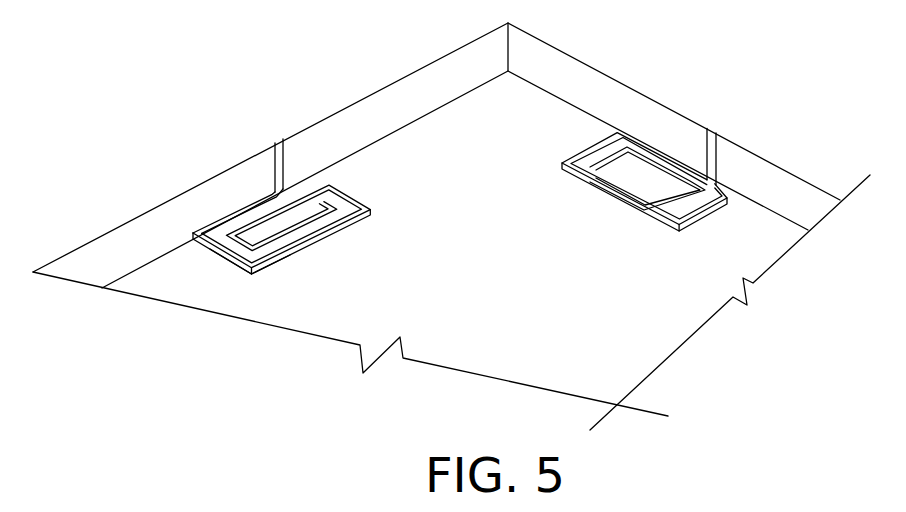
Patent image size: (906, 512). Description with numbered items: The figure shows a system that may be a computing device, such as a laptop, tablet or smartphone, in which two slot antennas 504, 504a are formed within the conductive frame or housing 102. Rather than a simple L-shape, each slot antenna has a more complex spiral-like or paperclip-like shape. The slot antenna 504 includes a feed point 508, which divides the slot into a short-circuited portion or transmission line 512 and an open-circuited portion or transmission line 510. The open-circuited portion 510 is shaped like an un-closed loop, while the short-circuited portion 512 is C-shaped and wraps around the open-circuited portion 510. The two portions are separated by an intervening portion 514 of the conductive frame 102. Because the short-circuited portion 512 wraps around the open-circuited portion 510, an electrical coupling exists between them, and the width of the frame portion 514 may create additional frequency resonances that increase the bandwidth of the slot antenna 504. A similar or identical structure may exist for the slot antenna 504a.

The conductive frame or housing 102 is at (460, 47).
The slot antenna 504 is at (275, 143).
The slot antenna 504a is at (707, 156).
The feed point 508 is at (313, 188).
The open-circuited portion 510 is at (317, 224).
The short-circuited portion 512 is at (220, 262).
The intervening portion of the conductive frame 514 is at (265, 258).